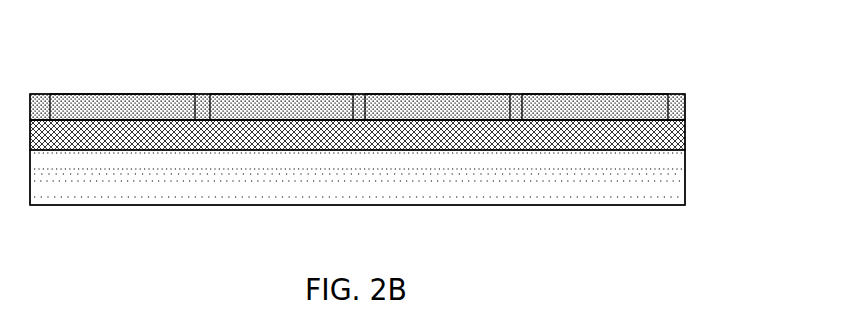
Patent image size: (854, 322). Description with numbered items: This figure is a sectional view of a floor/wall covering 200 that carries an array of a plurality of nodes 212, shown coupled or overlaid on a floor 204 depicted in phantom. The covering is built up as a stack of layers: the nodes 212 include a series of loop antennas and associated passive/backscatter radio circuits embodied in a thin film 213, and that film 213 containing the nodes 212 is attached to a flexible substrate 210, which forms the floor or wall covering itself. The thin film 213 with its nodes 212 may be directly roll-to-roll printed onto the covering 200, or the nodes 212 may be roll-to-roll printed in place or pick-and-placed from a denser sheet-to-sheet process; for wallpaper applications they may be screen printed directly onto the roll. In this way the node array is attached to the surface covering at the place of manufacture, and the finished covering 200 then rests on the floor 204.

The floor/wall covering 200 is at (698, 124).
The floor 204 is at (685, 175).
The flexible substrate 210 is at (685, 134).
The nodes 212 is at (67, 94).
The thin film 213 is at (685, 105).